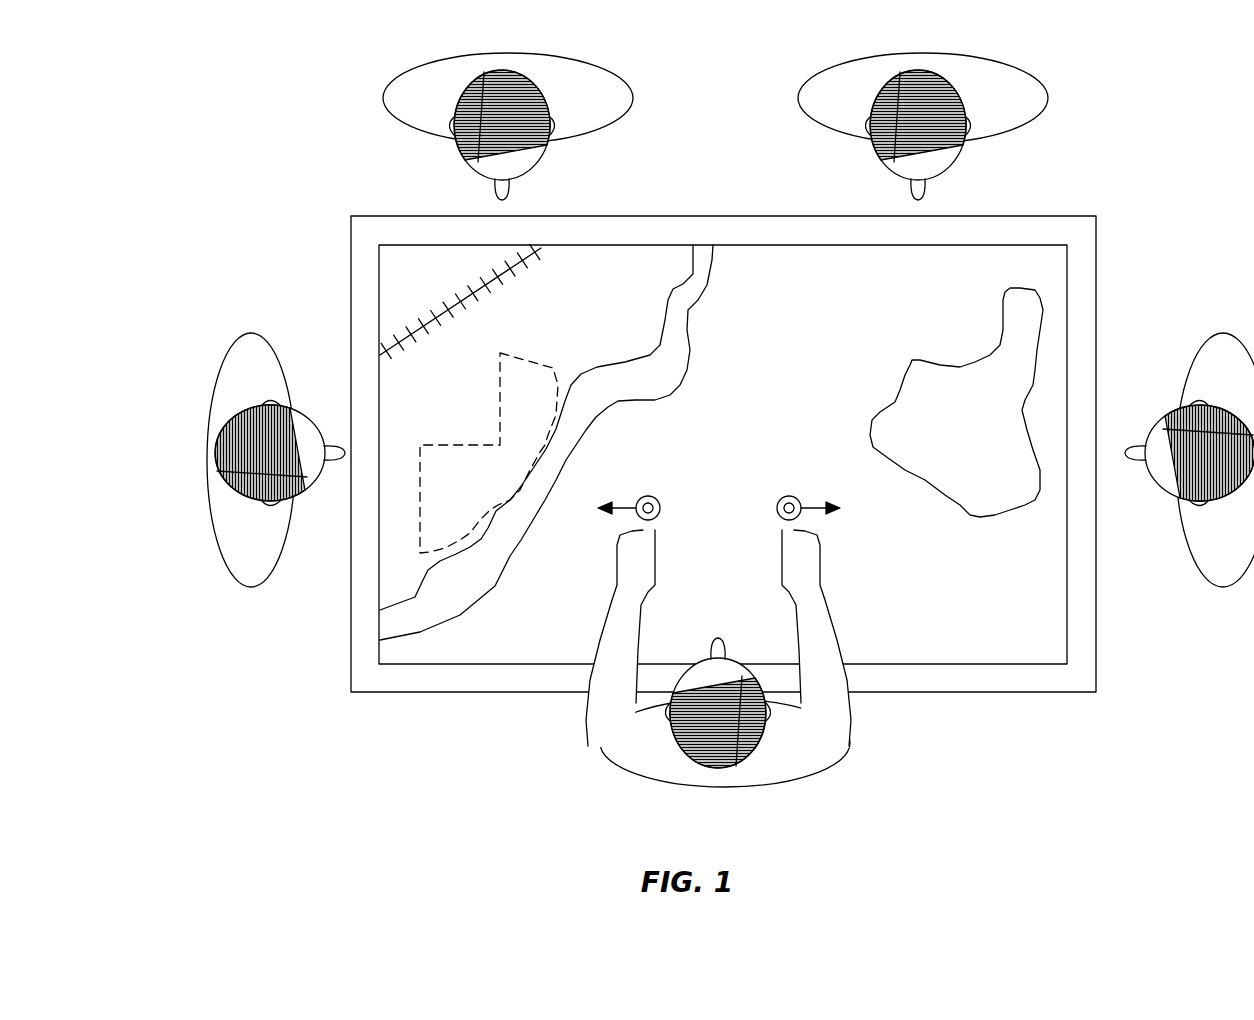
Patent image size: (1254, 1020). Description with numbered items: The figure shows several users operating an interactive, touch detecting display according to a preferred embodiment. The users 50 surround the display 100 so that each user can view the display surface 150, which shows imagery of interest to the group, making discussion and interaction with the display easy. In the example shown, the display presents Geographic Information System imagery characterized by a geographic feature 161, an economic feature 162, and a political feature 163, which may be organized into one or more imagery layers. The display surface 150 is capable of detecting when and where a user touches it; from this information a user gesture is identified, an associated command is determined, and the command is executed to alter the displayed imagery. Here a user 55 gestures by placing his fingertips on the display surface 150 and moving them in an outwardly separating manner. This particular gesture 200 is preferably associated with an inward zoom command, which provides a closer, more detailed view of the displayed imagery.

The users 50 is at (207, 382).
The user 55 is at (652, 790).
The display 100 is at (351, 290).
The display surface 150 is at (1028, 606).
The geographic feature 161 is at (912, 358).
The economic feature 162 is at (477, 292).
The political feature 163 is at (487, 443).
The gesture 200 is at (792, 496).